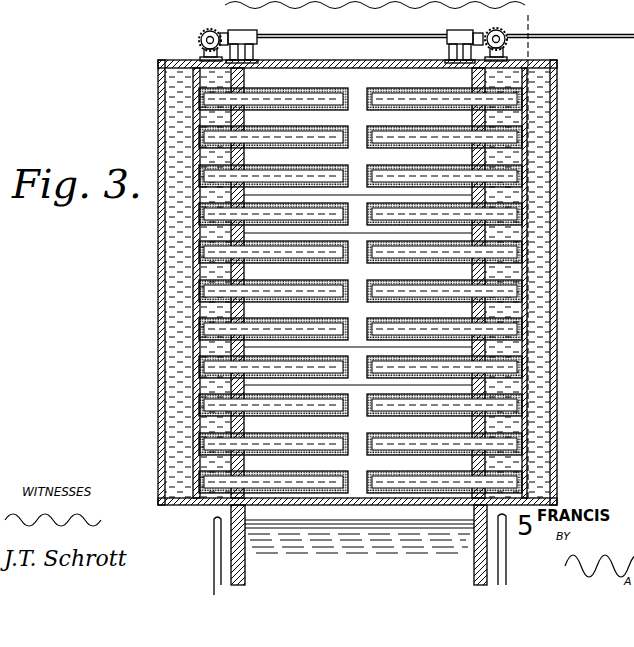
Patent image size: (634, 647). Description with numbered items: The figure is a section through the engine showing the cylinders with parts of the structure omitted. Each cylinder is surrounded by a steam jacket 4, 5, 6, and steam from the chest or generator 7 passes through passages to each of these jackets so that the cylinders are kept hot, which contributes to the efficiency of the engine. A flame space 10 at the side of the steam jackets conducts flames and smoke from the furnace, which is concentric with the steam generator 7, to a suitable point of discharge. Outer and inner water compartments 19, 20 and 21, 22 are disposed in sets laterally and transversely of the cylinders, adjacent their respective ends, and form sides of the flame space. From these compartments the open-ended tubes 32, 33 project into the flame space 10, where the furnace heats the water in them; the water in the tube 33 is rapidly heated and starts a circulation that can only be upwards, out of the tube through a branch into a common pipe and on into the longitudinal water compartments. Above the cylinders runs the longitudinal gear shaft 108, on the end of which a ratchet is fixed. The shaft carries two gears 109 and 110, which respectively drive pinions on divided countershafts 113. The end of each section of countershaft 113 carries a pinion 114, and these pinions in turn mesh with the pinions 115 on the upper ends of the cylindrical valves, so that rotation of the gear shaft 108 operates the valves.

The steam jacket 4 is at (546, 97).
The steam jacket 5 is at (460, 238).
The steam jacket 6 is at (493, 384).
The steam chest or generator 7 is at (262, 526).
The flame space 10 is at (268, 510).
The outer water compartment 19 is at (546, 185).
The inner water compartment 20 is at (503, 234).
The outer water compartment 21 is at (163, 313).
The inner water compartment 22 is at (210, 313).
The open-ended tube 32 is at (197, 177).
The open-ended tube 33 is at (257, 190).
The longitudinal gear shaft 108 is at (323, 33).
The gear 109 is at (493, 29).
The gear 110 is at (217, 31).
The divided countershaft 113 is at (200, 40).
The pinion 114 is at (205, 32).
The pinion 115 is at (205, 47).